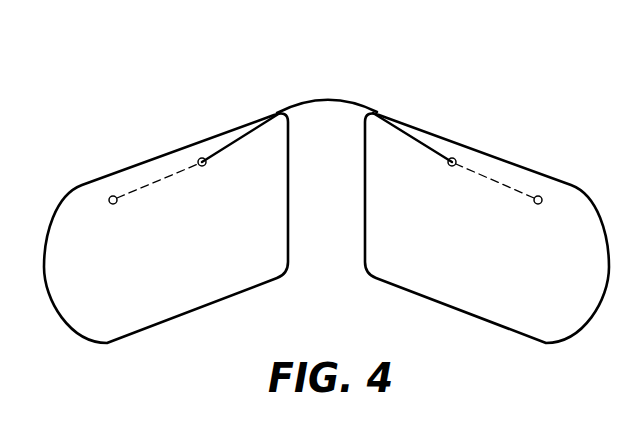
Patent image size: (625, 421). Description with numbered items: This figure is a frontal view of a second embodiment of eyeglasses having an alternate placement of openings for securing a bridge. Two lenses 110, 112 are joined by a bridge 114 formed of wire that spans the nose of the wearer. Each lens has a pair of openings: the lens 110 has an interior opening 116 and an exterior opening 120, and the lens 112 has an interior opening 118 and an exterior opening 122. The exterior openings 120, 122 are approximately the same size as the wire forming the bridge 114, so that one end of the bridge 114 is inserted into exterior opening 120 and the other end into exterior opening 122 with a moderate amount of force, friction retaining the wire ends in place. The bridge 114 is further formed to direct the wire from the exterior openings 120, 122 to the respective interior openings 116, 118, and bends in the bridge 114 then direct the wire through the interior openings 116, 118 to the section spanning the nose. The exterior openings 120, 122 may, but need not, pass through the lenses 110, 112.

The lens 110 is at (163, 152).
The lens 112 is at (507, 158).
The bridge 114 is at (330, 98).
The interior opening 116 is at (205, 166).
The interior opening 118 is at (449, 165).
The exterior opening 120 is at (116, 204).
The exterior opening 122 is at (536, 204).